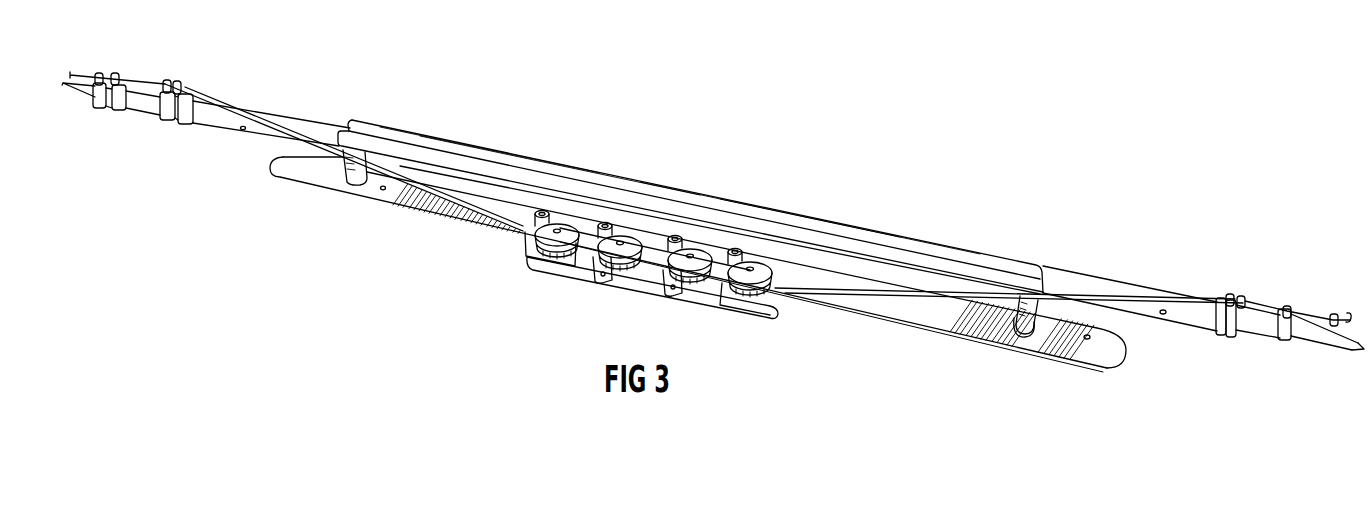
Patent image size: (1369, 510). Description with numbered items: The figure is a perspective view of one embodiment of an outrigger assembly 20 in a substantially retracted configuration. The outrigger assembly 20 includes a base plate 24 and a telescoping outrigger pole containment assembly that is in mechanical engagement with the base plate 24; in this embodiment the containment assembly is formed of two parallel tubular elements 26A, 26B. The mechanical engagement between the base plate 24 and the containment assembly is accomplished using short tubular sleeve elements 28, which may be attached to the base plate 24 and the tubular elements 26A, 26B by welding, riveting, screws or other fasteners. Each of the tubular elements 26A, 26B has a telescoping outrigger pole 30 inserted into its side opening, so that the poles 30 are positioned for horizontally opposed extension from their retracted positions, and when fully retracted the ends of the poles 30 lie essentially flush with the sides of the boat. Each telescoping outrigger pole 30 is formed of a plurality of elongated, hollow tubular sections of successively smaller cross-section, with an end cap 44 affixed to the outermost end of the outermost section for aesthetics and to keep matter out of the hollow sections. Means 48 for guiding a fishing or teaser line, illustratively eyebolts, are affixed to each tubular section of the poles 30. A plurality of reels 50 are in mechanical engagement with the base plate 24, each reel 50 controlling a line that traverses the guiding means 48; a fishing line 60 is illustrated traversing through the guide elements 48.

The outrigger assembly 20 is at (617, 155).
The base plate 24 is at (1097, 350).
The tubular element 26A is at (818, 220).
The tubular element 26B is at (935, 268).
The short tubular sleeve 28 is at (1017, 350).
The telescoping outrigger pole 30 is at (207, 163).
The end cap 44 is at (1340, 343).
The means for guiding a fishing or teaser line 48 is at (1333, 314).
The reel 50 is at (793, 280).
The fishing line 60 is at (1120, 293).